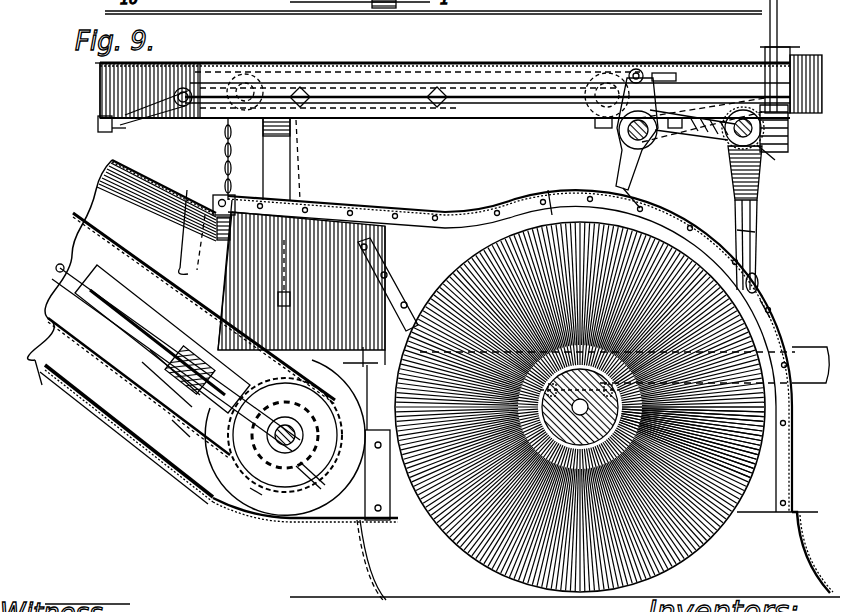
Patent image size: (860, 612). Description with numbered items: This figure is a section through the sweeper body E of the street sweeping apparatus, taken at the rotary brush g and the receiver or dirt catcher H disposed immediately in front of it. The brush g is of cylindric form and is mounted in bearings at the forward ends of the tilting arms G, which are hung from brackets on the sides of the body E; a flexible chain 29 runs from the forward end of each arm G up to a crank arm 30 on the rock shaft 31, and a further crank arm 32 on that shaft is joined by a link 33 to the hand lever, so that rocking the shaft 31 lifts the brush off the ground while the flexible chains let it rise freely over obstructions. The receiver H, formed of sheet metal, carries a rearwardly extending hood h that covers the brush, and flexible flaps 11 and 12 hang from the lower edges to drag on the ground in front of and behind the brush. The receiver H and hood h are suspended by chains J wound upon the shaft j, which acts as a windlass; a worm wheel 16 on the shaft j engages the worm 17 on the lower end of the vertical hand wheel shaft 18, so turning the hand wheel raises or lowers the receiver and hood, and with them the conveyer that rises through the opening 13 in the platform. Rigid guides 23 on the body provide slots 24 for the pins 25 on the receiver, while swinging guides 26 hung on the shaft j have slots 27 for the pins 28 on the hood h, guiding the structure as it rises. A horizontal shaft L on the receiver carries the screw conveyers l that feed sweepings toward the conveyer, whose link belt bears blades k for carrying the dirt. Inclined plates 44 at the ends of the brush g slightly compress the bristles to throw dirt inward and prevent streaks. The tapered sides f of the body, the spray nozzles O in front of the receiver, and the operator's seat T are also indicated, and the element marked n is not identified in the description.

The flexible flap 11 is at (343, 567).
The flexible flap 12 is at (802, 564).
The opening 13 is at (115, 90).
The worm wheel 16 is at (735, 142).
The worm 17 is at (786, 139).
The vertical hand wheel shaft 18 is at (782, 12).
The rigid guide 23 is at (298, 149).
The slot 24 is at (330, 212).
The pin or bolt 25 is at (288, 306).
The swinging guide 26 is at (740, 201).
The slot 27 is at (757, 232).
The bolt or pin 28 is at (758, 280).
The chain 29 is at (548, 190).
The crank arm 30 is at (622, 153).
The rock shaft 31 is at (700, 130).
The crank arm 32 is at (628, 110).
The link 33 is at (655, 74).
The inclined plate 44 is at (413, 520).
The body E is at (458, 62).
The tilting arm G is at (808, 358).
The receiver or dirt catcher H is at (301, 272).
The chain J is at (222, 148).
The shaft L is at (284, 456).
The nozzle O is at (104, 128).
The seat T is at (45, 386).
The tapered side f is at (92, 72).
The rotary brush g is at (478, 280).
The hood h is at (122, 260).
The shaft j is at (770, 160).
The blade k is at (100, 414).
The screw conveyer l is at (257, 492).
The slide block n is at (172, 420).